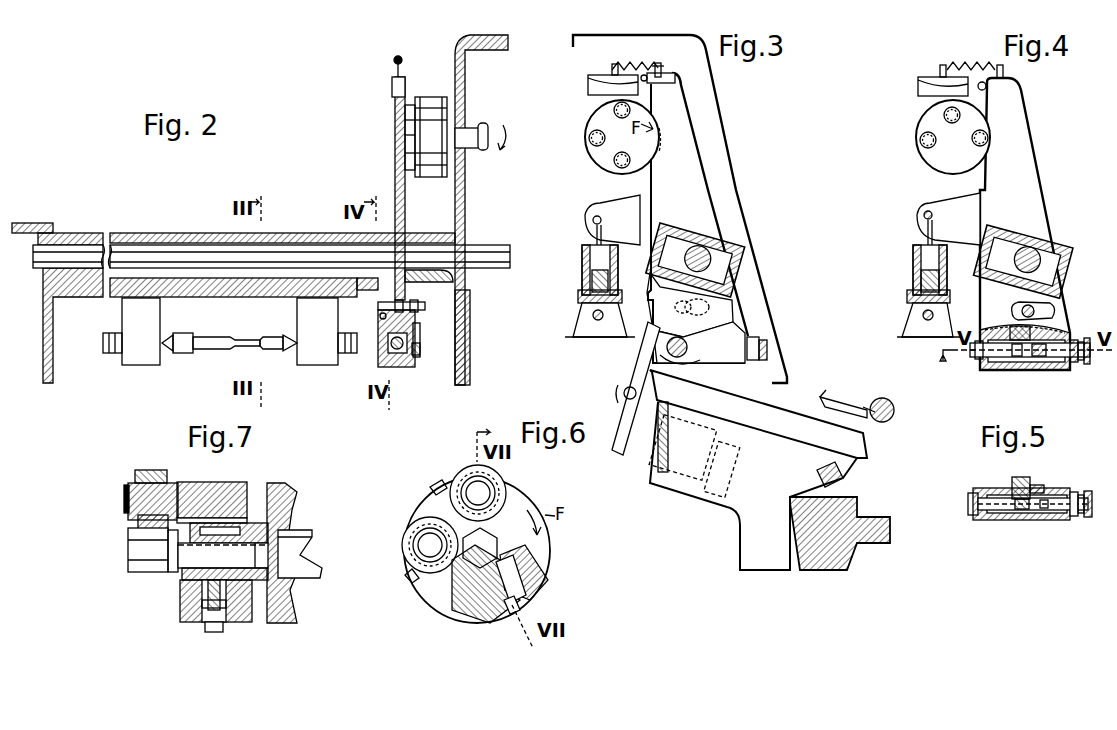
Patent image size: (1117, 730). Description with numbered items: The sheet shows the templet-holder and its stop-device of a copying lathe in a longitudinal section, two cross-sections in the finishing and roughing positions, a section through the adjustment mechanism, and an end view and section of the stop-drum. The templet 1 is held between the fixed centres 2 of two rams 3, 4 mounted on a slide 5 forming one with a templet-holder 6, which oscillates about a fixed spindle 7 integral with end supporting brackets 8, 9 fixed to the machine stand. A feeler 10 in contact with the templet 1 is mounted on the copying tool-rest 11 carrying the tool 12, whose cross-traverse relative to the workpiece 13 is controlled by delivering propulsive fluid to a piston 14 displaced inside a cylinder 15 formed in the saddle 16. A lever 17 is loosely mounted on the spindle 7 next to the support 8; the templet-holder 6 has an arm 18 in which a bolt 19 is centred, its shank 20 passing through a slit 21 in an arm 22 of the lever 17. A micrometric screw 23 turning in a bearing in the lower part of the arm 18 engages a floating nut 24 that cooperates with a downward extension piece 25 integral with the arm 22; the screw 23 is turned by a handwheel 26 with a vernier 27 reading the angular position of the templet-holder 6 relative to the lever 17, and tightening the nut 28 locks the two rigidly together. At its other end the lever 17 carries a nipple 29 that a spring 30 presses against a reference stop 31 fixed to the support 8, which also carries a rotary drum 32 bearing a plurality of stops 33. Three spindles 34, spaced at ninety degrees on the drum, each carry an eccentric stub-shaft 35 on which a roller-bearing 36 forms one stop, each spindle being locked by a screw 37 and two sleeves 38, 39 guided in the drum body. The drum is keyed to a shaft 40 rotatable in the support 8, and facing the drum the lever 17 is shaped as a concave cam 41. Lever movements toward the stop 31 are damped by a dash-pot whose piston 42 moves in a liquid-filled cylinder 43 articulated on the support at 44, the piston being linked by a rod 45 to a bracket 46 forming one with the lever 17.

In FIG. 2, the templet 1 is at (280, 337).
In FIG. 3, the templet 1 is at (686, 355).
In FIG. 2, the fixed centres 2 is at (176, 350).
In FIG. 2, the ram 3 is at (305, 360).
In FIG. 3, the ram 3 is at (700, 338).
In FIG. 2, the ram 4 is at (125, 358).
In FIG. 2, the slide 5 is at (84, 294).
In FIG. 3, the slide 5 is at (680, 290).
In FIG. 2, the templet-holder 6 is at (184, 234).
In FIG. 3, the templet-holder 6 is at (722, 270).
In FIG. 4, the templet-holder 6 is at (1050, 275).
In FIG. 2, the fixed spindle 7 is at (130, 250).
In FIG. 3, the fixed spindle 7 is at (694, 240).
In FIG. 4, the fixed spindle 7 is at (1022, 245).
In FIG. 2, the end supporting bracket 8 is at (455, 50).
In FIG. 7, the end supporting bracket 8 is at (285, 500).
In FIG. 2, the end supporting bracket 9 is at (24, 224).
In FIG. 3, the feeler 10 is at (633, 385).
In FIG. 3, the copying tool-rest 11 is at (780, 413).
In FIG. 3, the tool 12 is at (846, 404).
In FIG. 3, the workpiece 13 is at (877, 422).
In FIG. 3, the piston 14 is at (720, 483).
In FIG. 3, the cylinder 15 is at (665, 483).
In FIG. 3, the saddle 16 is at (748, 558).
In FIG. 2, the lever 17 is at (398, 182).
In FIG. 3, the lever 17 is at (688, 153).
In FIG. 4, the lever 17 is at (1025, 224).
In FIG. 4, the arm 18 is at (982, 368).
In FIG. 5, the arm 18 is at (983, 518).
In FIG. 2, the bolt 19 is at (380, 318).
In FIG. 3, the bolt 19 is at (697, 318).
In FIG. 2, the shank 20 is at (385, 306).
In FIG. 3, the shank 20 is at (692, 307).
In FIG. 4, the shank 20 is at (1014, 308).
In FIG. 3, the slit 21 is at (733, 308).
In FIG. 4, the slit 21 is at (1053, 310).
In FIG. 2, the arm 22 is at (412, 308).
In FIG. 2, the micrometric screw 23 is at (378, 352).
In FIG. 4, the micrometric screw 23 is at (1040, 360).
In FIG. 5, the micrometric screw 23 is at (1035, 516).
In FIG. 2, the floating nut 24 is at (398, 360).
In FIG. 4, the floating nut 24 is at (1014, 366).
In FIG. 5, the floating nut 24 is at (1012, 482).
In FIG. 2, the extension piece 25 is at (413, 357).
In FIG. 5, the extension piece 25 is at (1040, 486).
In FIG. 3, the handwheel 26 is at (765, 340).
In FIG. 4, the handwheel 26 is at (1090, 364).
In FIG. 5, the handwheel 26 is at (1090, 517).
In FIG. 3, the vernier 27 is at (750, 365).
In FIG. 4, the vernier 27 is at (1074, 364).
In FIG. 5, the vernier 27 is at (1075, 516).
In FIG. 2, the nut 28 is at (414, 338).
In FIG. 3, the nipple 29 is at (680, 80).
In FIG. 4, the nipple 29 is at (1012, 82).
In FIG. 3, the spring 30 is at (654, 62).
In FIG. 4, the spring 30 is at (955, 62).
In FIG. 3, the reference stop 31 is at (595, 76).
In FIG. 4, the reference stop 31 is at (926, 78).
In FIG. 2, the rotary drum 32 is at (430, 165).
In FIG. 3, the rotary drum 32 is at (598, 150).
In FIG. 4, the rotary drum 32 is at (938, 160).
In FIG. 7, the rotary drum 32 is at (233, 483).
In FIG. 6, the rotary drum 32 is at (535, 498).
In FIG. 3, the stops 33 is at (594, 134).
In FIG. 4, the stops 33 is at (925, 132).
In FIG. 7, the spindle 34 is at (172, 492).
In FIG. 6, the spindle 34 is at (458, 608).
In FIG. 7, the stub-shaft 35 is at (126, 490).
In FIG. 7, the roller-bearing 36 is at (142, 470).
In FIG. 6, the roller-bearing 36 is at (493, 478).
In FIG. 7, the screw 37 is at (222, 630).
In FIG. 6, the screw 37 is at (508, 618).
In FIG. 7, the sleeve 38 is at (182, 597).
In FIG. 6, the sleeve 38 is at (528, 548).
In FIG. 7, the sleeve 39 is at (204, 624).
In FIG. 6, the sleeve 39 is at (530, 590).
In FIG. 2, the shaft 40 is at (478, 125).
In FIG. 7, the shaft 40 is at (302, 565).
In FIG. 3, the concave cam 41 is at (662, 130).
In FIG. 4, the concave cam 41 is at (990, 128).
In FIG. 3, the piston 42 is at (592, 287).
In FIG. 3, the cylinder 43 is at (584, 256).
In FIG. 4, the cylinder 43 is at (928, 274).
In FIG. 3, the articulation 44 is at (598, 322).
In FIG. 4, the articulation 44 is at (928, 320).
In FIG. 3, the rod 45 is at (596, 233).
In FIG. 4, the rod 45 is at (930, 239).
In FIG. 3, the bracket 46 is at (618, 210).
In FIG. 4, the bracket 46 is at (948, 219).